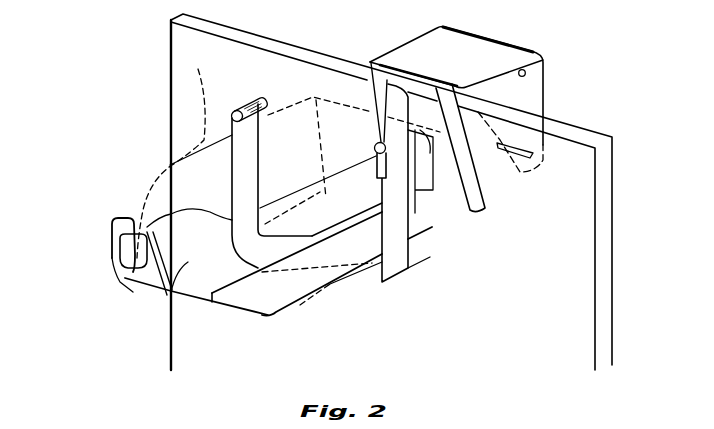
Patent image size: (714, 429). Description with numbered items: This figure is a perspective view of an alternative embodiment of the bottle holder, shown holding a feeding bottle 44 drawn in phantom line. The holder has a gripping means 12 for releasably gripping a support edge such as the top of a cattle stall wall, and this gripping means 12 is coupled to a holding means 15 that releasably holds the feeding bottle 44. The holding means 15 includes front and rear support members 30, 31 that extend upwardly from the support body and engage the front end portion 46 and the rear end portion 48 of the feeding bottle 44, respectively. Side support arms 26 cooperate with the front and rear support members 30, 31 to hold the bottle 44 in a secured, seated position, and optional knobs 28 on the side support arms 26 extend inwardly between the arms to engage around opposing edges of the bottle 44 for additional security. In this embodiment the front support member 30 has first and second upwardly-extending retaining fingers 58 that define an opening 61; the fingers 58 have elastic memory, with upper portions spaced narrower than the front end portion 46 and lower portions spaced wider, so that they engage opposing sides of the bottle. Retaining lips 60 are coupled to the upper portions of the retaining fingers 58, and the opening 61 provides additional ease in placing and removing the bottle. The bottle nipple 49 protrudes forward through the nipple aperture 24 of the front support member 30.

The gripping means 12 is at (541, 45).
The holding means 15 is at (181, 120).
The nipple aperture 24 is at (125, 278).
The side support arms 26 is at (245, 174).
The knobs 28 is at (250, 104).
The front support member 30 is at (152, 290).
The rear support member 31 is at (452, 195).
The feeding bottle 44 is at (173, 155).
The front end portion 46 is at (130, 186).
The rear end portion 48 is at (312, 88).
The bottle nipple 49 is at (87, 280).
The retaining fingers 58 is at (113, 257).
The retaining lips 60 is at (112, 230).
The opening 61 is at (118, 219).